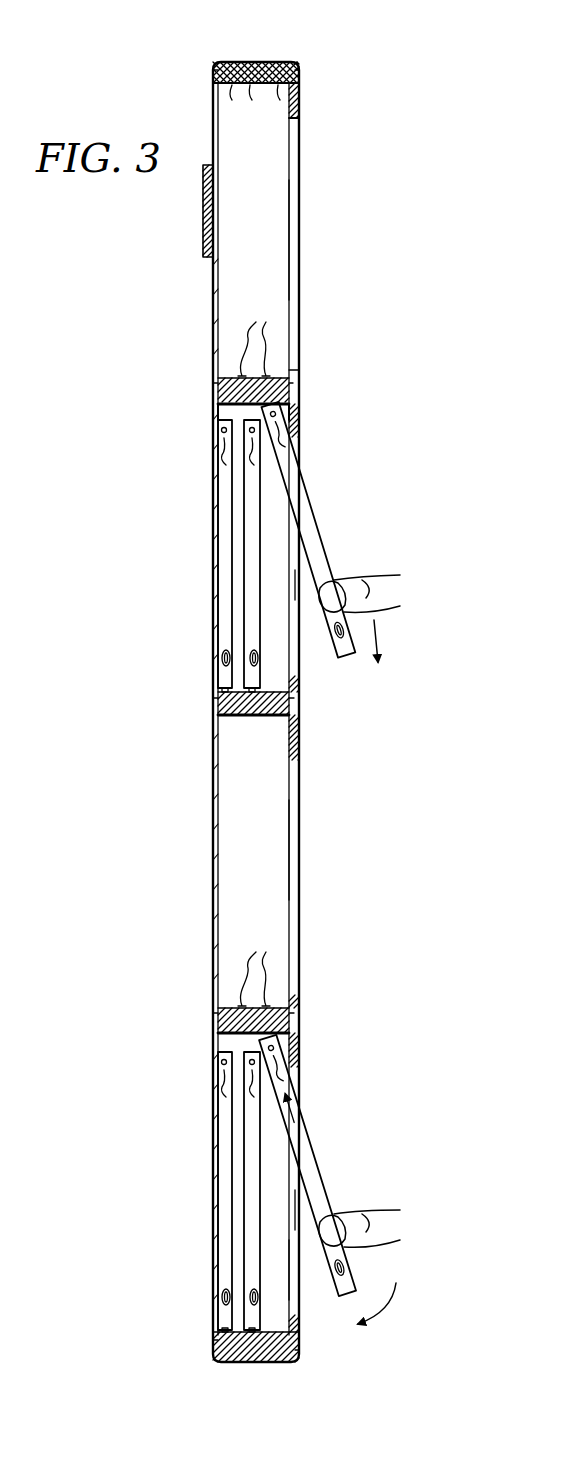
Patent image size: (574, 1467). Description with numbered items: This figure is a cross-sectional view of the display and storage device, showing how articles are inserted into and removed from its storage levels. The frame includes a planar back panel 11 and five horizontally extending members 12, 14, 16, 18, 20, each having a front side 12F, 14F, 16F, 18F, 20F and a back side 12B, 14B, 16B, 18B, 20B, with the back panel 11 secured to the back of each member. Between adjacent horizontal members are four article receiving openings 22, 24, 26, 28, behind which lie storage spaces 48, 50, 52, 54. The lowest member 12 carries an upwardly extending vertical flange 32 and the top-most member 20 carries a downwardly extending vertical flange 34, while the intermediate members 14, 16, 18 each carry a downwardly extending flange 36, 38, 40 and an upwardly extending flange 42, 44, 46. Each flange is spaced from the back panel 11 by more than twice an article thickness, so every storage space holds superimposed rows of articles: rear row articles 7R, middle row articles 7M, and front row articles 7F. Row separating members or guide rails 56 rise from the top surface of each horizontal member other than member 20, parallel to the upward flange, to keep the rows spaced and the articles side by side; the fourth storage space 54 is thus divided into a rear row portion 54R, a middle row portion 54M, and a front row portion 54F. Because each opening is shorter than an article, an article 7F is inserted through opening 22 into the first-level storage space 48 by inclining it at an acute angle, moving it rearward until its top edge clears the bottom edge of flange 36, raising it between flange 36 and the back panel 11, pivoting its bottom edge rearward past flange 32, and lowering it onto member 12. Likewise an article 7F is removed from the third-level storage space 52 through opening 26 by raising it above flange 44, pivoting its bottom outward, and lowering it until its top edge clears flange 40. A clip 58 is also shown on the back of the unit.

The planar back panel 11 is at (213, 830).
The first horizontally extending member 12 is at (299, 1350).
The back side of first horizontal member 12B is at (213, 1339).
The front side of first horizontal member 12F is at (299, 1357).
The second horizontally extending member 14 is at (295, 1023).
The back side of second horizontal member 14B is at (213, 1019).
The front side of second horizontal member 14F is at (299, 1037).
The third horizontally extending member 16 is at (298, 713).
The back side of third horizontal member 16B is at (213, 699).
The front side of third horizontal member 16F is at (299, 700).
The fourth horizontally extending member 18 is at (296, 395).
The back side of fourth horizontal member 18B is at (213, 386).
The front side of fourth horizontal member 18F is at (289, 379).
The fifth horizontally extending member 20 is at (295, 66).
The back side of fifth horizontal member 20B is at (213, 76).
The front side of fifth horizontal member 20F is at (299, 82).
The article receiving opening 22 is at (296, 1300).
The article receiving opening 24 is at (293, 858).
The article receiving opening 26 is at (300, 574).
The article receiving opening 28 is at (293, 242).
The vertical flange 32 is at (299, 1323).
The vertical flange 34 is at (299, 110).
The vertical flange 36 is at (299, 1058).
The vertical flange 38 is at (299, 745).
The vertical flange 40 is at (299, 424).
The vertical flange 42 is at (299, 1002).
The vertical flange 44 is at (299, 685).
The vertical flange 46 is at (300, 367).
The storage space 48 is at (300, 1198).
The storage space 50 is at (268, 816).
The storage space 52 is at (268, 602).
The storage space 54 is at (268, 246).
The rear row portion of fourth storage space 54R is at (222, 70).
The middle row portion of fourth storage space 54M is at (263, 72).
The front row portion of fourth storage space 54F is at (286, 72).
The row separating member 56 is at (258, 651).
The belt clip 58 is at (204, 234).
The rear row article 7R is at (224, 516).
The middle row article 7M is at (252, 484).
The front row article 7F is at (318, 520).